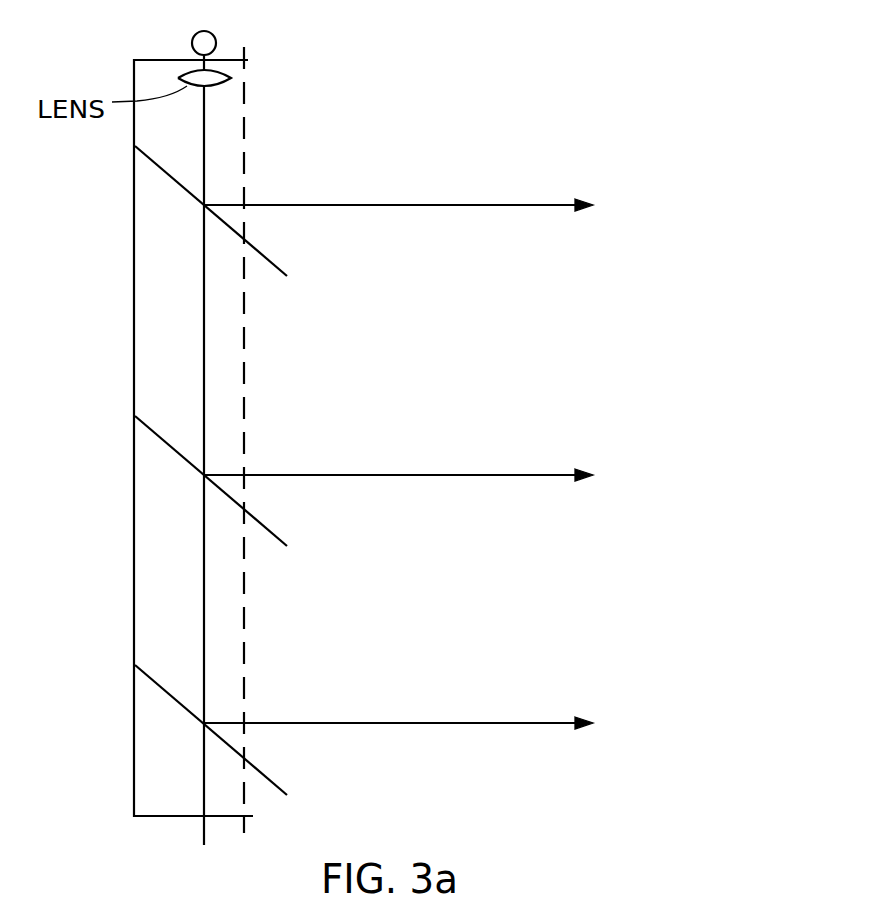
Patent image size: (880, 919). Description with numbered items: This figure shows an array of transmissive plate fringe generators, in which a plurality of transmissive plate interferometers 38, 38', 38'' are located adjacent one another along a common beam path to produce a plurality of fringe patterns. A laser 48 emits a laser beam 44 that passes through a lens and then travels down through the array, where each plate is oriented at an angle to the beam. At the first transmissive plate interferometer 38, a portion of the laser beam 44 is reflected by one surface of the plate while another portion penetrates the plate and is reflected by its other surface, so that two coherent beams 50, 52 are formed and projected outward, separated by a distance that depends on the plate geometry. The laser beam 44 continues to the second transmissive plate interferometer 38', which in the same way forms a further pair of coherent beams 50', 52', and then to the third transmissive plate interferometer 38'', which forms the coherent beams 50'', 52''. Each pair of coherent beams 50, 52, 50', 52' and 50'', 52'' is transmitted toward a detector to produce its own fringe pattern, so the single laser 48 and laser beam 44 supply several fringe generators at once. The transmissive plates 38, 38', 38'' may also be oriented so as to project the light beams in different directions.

The transmissive plate interferometer 38 is at (246, 230).
The transmissive plate interferometer 38' is at (249, 500).
The transmissive plate interferometer 38'' is at (251, 748).
The laser beam 44 is at (204, 141).
The laser 48 is at (210, 31).
The reflected beam portion 50 is at (398, 192).
The coherent beam 52 is at (398, 205).
The reflected beam portion 50' is at (398, 459).
The coherent beam 52' is at (398, 475).
The reflected beam portion 50'' is at (398, 708).
The coherent beam 52'' is at (398, 723).